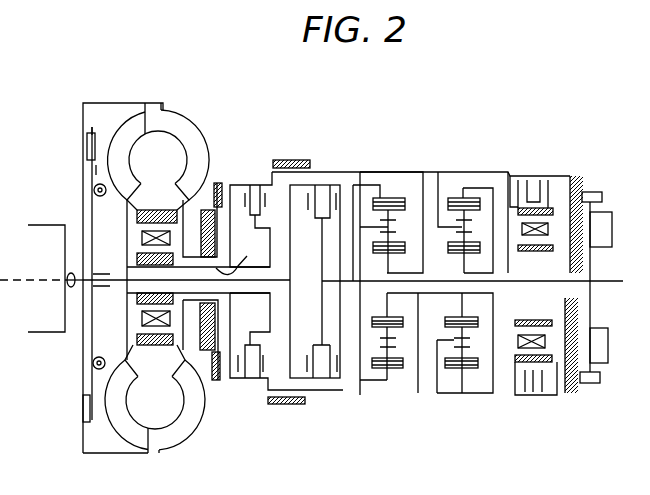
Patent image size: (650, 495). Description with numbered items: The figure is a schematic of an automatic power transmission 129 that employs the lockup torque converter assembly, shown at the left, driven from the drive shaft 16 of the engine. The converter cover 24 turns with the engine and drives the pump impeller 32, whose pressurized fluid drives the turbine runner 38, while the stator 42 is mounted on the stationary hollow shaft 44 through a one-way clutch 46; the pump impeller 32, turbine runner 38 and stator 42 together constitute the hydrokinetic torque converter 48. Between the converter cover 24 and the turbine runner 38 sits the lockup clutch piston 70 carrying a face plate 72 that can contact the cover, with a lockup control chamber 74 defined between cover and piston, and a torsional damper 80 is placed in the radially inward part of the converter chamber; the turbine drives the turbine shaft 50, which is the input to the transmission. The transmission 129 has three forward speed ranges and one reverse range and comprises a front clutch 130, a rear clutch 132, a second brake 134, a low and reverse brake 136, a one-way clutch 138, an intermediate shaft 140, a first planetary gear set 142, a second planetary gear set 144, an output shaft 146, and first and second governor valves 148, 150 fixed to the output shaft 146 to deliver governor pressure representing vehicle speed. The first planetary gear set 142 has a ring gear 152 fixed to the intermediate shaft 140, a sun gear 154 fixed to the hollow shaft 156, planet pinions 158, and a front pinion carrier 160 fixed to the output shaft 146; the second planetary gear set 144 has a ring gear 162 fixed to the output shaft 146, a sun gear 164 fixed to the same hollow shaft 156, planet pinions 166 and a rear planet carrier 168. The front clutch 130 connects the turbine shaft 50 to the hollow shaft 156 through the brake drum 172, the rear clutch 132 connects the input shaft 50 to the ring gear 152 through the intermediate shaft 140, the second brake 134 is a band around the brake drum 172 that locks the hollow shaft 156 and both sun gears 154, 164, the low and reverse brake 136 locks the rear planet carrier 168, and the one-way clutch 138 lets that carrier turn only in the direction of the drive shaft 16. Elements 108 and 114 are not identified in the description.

The drive shaft 16 is at (50, 234).
The converter cover 24 is at (83, 114).
The pump impeller 32 is at (205, 142).
The turbine runner 38 is at (147, 112).
The stator 42 is at (158, 190).
The stationary hollow shaft 44 is at (241, 255).
The one-way clutch 46 is at (138, 238).
The hydrokinetic torque converter 48 is at (175, 148).
The turbine shaft 50 is at (137, 284).
The lockup clutch piston 70 is at (92, 170).
The face plate 72 is at (87, 144).
The lockup control chamber 74 is at (94, 190).
The torsional damper 80 is at (102, 158).
The brake band 108 is at (190, 302).
The lower ring gear 114 is at (188, 374).
The transmission 129 is at (352, 97).
The front clutch 130 is at (258, 185).
The rear clutch 132 is at (332, 274).
The second brake 134 is at (292, 160).
The low and reverse brake 136 is at (530, 177).
The one-way clutch 138 is at (556, 208).
The intermediate shaft 140 is at (330, 284).
The first planetary gear set 142 is at (386, 276).
The second planetary gear set 144 is at (477, 192).
The output shaft 146 is at (612, 283).
The first governor valve 148 is at (608, 346).
The second governor valve 150 is at (612, 229).
The ring gear 152 is at (395, 184).
The sun gear 154 is at (403, 303).
The hollow shaft 156 is at (438, 297).
The planet pinions 158 is at (366, 320).
The front pinion carrier 160 is at (343, 378).
The ring gear 162 is at (468, 197).
The sun gear 164 is at (472, 256).
The planet pinions 166 is at (465, 368).
The rear planet carrier 168 is at (437, 194).
The brake drum 172 is at (327, 172).